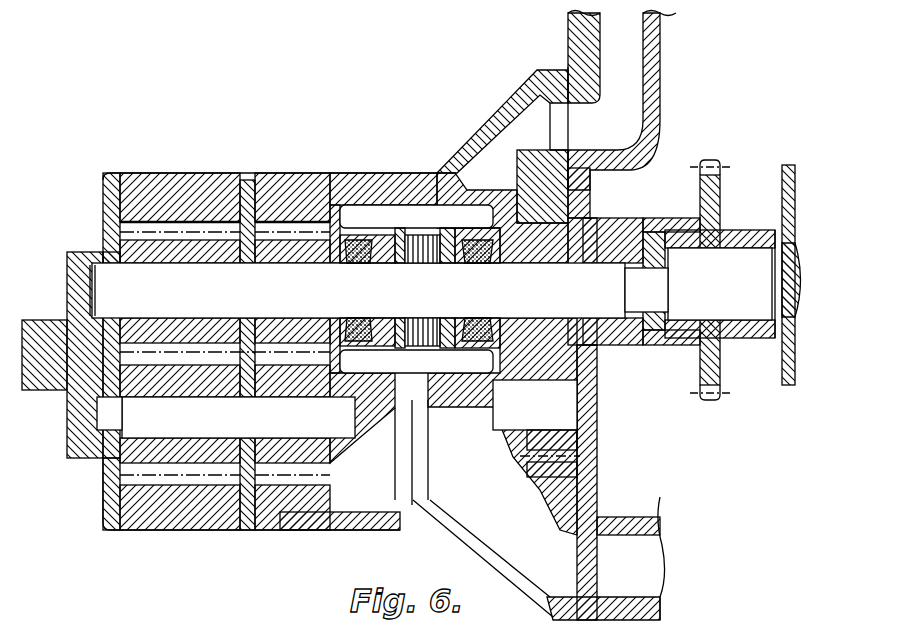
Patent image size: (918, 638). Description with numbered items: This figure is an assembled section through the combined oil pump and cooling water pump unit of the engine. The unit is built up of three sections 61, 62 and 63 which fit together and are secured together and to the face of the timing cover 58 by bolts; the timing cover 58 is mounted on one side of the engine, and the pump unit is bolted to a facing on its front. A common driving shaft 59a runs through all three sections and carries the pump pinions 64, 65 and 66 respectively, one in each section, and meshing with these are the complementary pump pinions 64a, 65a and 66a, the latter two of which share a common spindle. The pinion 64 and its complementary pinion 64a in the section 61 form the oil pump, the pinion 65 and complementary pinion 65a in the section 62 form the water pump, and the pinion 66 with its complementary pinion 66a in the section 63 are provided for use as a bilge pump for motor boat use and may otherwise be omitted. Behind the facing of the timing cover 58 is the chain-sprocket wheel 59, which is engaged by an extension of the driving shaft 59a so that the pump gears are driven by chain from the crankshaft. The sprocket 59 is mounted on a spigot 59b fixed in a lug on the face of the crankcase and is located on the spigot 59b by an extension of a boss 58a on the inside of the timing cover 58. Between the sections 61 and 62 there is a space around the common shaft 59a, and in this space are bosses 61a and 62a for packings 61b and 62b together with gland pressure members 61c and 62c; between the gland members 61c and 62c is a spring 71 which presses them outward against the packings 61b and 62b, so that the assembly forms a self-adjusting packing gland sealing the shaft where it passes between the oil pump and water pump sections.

The timing cover 58 is at (582, 30).
The boss 58a is at (652, 215).
The chain-sprocket wheel 59 is at (723, 199).
The driving shaft 59a is at (104, 261).
The spigot 59b is at (736, 264).
The section 61 is at (462, 539).
The boss 61a is at (467, 227).
The packing 61b is at (498, 241).
The gland pressure member 61c is at (431, 227).
The section 62 is at (329, 525).
The boss 62a is at (354, 225).
The packing 62b is at (346, 239).
The gland pressure member 62c is at (400, 227).
The section 63 is at (215, 531).
The pump pinion 64 is at (591, 217).
The complementary pump pinion 64a is at (579, 451).
The pump pinion 65 is at (284, 235).
The complementary pump pinion 65a is at (333, 453).
The pump pinion 66 is at (173, 236).
The complementary pump pinion 66a is at (119, 473).
The spring 71 is at (420, 227).